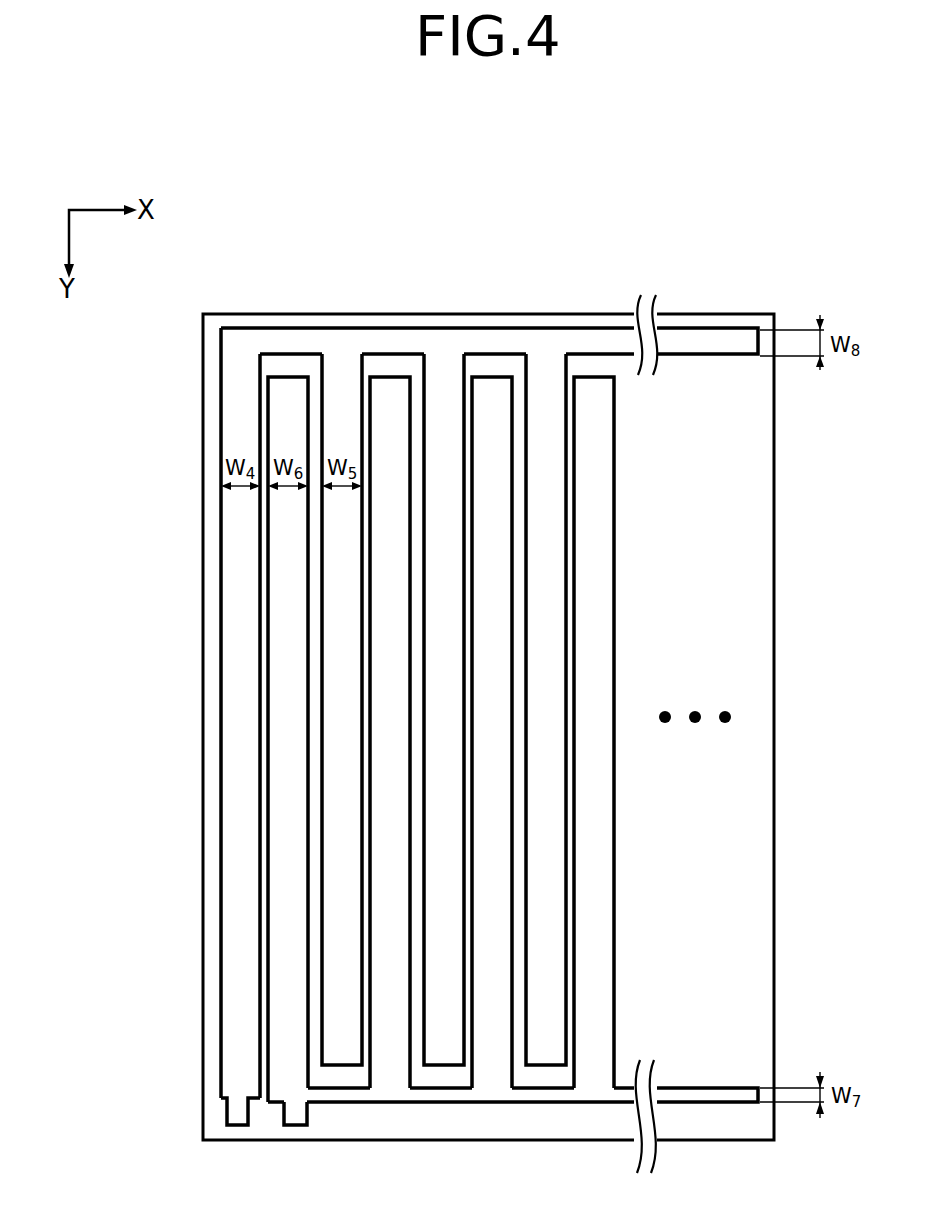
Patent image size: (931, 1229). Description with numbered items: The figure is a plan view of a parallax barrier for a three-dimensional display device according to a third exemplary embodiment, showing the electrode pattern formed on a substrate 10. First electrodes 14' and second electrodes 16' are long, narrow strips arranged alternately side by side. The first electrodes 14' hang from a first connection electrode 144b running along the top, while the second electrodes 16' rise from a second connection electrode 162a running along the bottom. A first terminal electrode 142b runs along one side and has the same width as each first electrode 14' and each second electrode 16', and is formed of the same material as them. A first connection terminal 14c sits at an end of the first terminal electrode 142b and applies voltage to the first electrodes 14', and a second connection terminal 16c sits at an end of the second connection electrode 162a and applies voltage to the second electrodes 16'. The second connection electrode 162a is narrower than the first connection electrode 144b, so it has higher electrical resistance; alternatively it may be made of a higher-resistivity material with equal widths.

The piezoelectric substrate 10 is at (776, 715).
The first connection electrode 144b is at (723, 345).
The first terminal electrode 142b is at (237, 597).
The first electrodes 14' is at (346, 709).
The first connection terminal 14c is at (238, 1112).
The second electrodes 16' is at (370, 739).
The second connection electrode 162a is at (718, 1095).
The second connection terminal 16c is at (297, 1112).